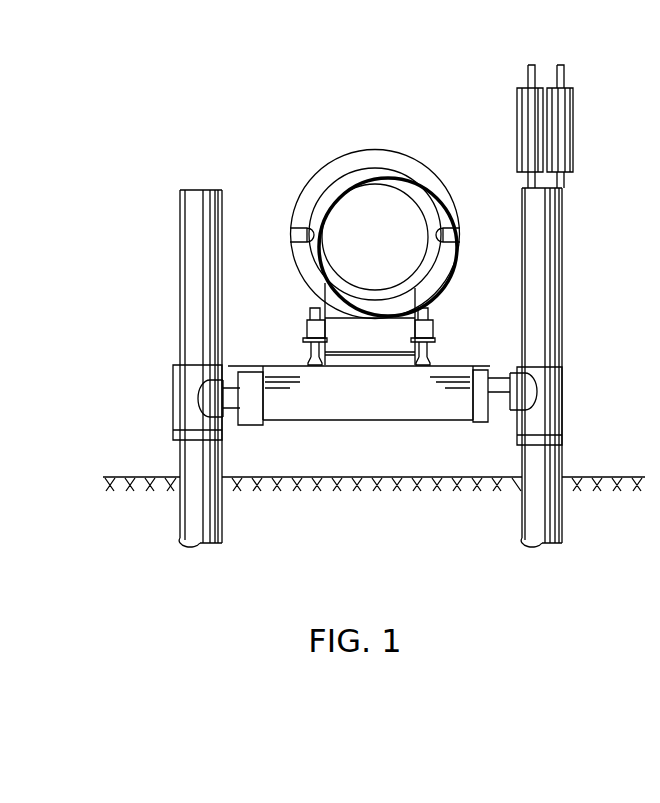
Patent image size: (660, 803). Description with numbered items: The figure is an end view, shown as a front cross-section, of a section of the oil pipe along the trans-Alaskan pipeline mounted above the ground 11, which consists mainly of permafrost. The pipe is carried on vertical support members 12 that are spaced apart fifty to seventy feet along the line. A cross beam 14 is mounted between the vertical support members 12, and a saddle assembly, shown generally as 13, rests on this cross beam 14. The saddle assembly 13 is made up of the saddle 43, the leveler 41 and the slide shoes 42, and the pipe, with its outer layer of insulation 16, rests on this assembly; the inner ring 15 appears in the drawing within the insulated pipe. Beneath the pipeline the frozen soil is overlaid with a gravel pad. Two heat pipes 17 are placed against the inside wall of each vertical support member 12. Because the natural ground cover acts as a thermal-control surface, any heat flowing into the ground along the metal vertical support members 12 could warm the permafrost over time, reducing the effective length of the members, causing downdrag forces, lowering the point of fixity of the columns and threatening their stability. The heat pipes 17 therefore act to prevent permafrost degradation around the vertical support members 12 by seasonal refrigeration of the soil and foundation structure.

The ground 11 is at (605, 477).
The vertical support members 12 is at (185, 212).
The saddle assembly 13 is at (495, 292).
The cross beam 14 is at (360, 412).
The inner ring 15 is at (325, 190).
The outer layer of insulation 16 is at (380, 150).
The heat pipes 17 is at (518, 98).
The leveler 41 is at (436, 336).
The slide shoes 42 is at (436, 360).
The saddle 43 is at (325, 290).